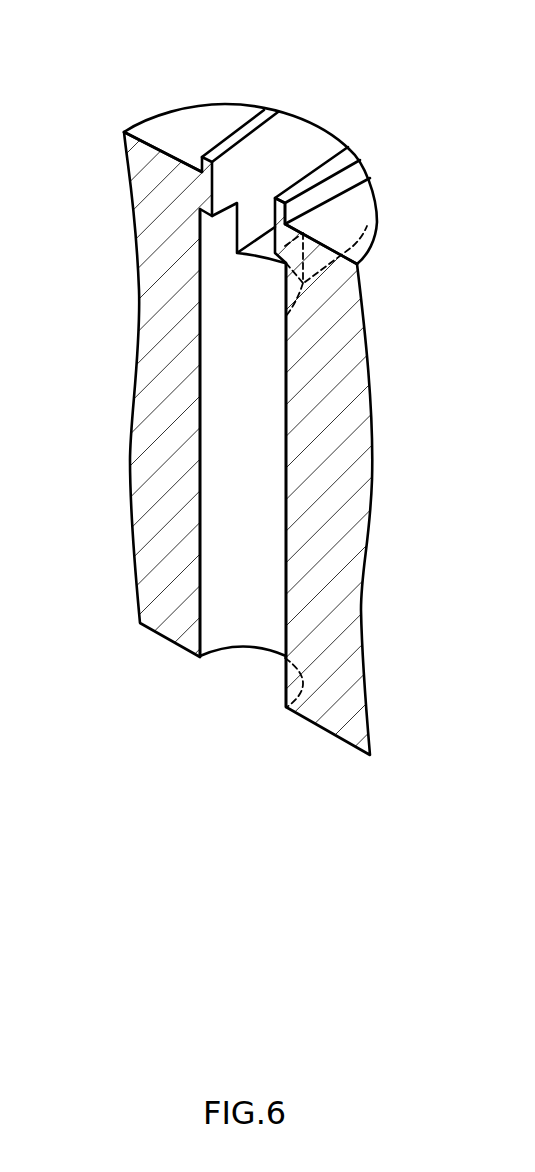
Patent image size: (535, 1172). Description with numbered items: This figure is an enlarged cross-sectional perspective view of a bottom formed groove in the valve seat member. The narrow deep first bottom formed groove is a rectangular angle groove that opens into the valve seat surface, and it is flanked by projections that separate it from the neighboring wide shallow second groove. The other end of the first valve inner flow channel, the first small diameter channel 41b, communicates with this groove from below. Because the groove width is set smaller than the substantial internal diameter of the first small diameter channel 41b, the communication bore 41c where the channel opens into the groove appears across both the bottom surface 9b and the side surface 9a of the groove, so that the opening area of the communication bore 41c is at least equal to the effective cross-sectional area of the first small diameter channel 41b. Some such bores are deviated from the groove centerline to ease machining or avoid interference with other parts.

The side surface 9a is at (280, 142).
The bottom surface 9b is at (330, 147).
The communication bore 41c is at (260, 277).
The first small diameter channel 41b is at (255, 617).